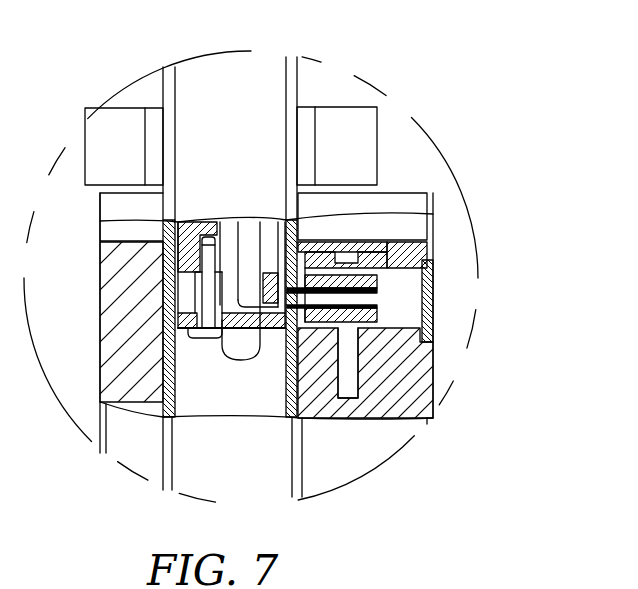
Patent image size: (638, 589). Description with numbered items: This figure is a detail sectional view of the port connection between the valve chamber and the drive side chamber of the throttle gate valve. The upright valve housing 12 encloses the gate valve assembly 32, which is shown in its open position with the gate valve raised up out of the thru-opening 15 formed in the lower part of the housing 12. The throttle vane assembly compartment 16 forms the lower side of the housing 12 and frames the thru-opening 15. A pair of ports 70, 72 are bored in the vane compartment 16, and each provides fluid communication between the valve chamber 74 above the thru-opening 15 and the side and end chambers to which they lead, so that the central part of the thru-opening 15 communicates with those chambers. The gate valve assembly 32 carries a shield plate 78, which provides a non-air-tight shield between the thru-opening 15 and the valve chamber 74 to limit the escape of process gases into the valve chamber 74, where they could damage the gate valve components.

The valve housing 12 is at (173, 100).
The valve chamber 74 is at (222, 72).
The gate valve assembly 32 is at (200, 217).
The throttle vane assembly compartment 16 is at (100, 292).
The shield plate 78 is at (242, 330).
The thru-opening 15 is at (251, 477).
The port 70 is at (357, 391).
The port 72 is at (357, 391).